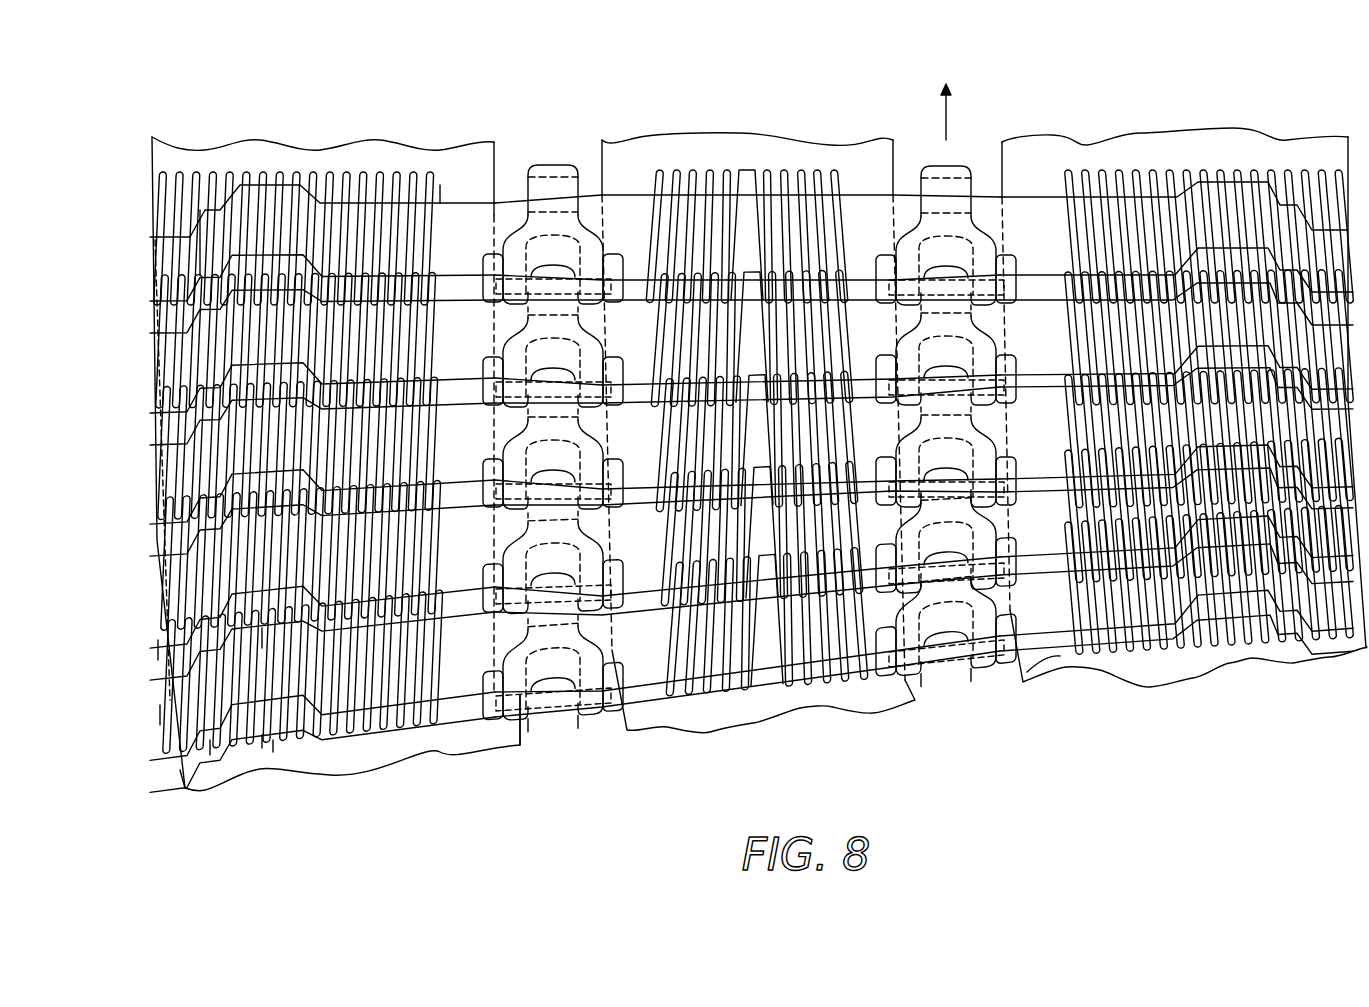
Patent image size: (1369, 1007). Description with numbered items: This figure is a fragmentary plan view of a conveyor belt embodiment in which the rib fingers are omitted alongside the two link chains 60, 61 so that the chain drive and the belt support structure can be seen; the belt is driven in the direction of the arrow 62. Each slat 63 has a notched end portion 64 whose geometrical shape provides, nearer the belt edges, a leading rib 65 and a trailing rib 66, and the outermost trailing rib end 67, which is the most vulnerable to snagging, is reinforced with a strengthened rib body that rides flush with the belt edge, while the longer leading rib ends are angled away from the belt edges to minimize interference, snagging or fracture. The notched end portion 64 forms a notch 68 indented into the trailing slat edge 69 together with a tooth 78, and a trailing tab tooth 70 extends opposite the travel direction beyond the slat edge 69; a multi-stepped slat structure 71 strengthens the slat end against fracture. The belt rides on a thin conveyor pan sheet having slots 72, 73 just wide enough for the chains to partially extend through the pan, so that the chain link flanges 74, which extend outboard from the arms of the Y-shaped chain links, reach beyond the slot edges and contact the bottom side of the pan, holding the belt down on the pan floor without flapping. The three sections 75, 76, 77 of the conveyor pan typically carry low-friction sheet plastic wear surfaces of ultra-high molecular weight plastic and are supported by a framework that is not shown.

The link chain 60 is at (553, 451).
The link chain 61 is at (949, 433).
The arrow 62 is at (938, 122).
The slat 63 is at (462, 223).
The notched end portion 64 is at (273, 752).
The leading rib 65 is at (158, 647).
The trailing rib 66 is at (213, 755).
The outermost trailing rib end 67 is at (160, 715).
The notch 68 is at (262, 748).
The trailing slat edge 69 is at (477, 702).
The trailing tab tooth 70 is at (185, 788).
The multi-stepped slat structure 71 is at (213, 243).
The slot 72 is at (565, 718).
The slot 73 is at (966, 673).
The chain link flange 74 is at (1052, 652).
The conveyor pan section 75 is at (346, 157).
The conveyor pan section 76 is at (806, 152).
The conveyor pan section 77 is at (1132, 157).
The tooth 78 is at (263, 637).